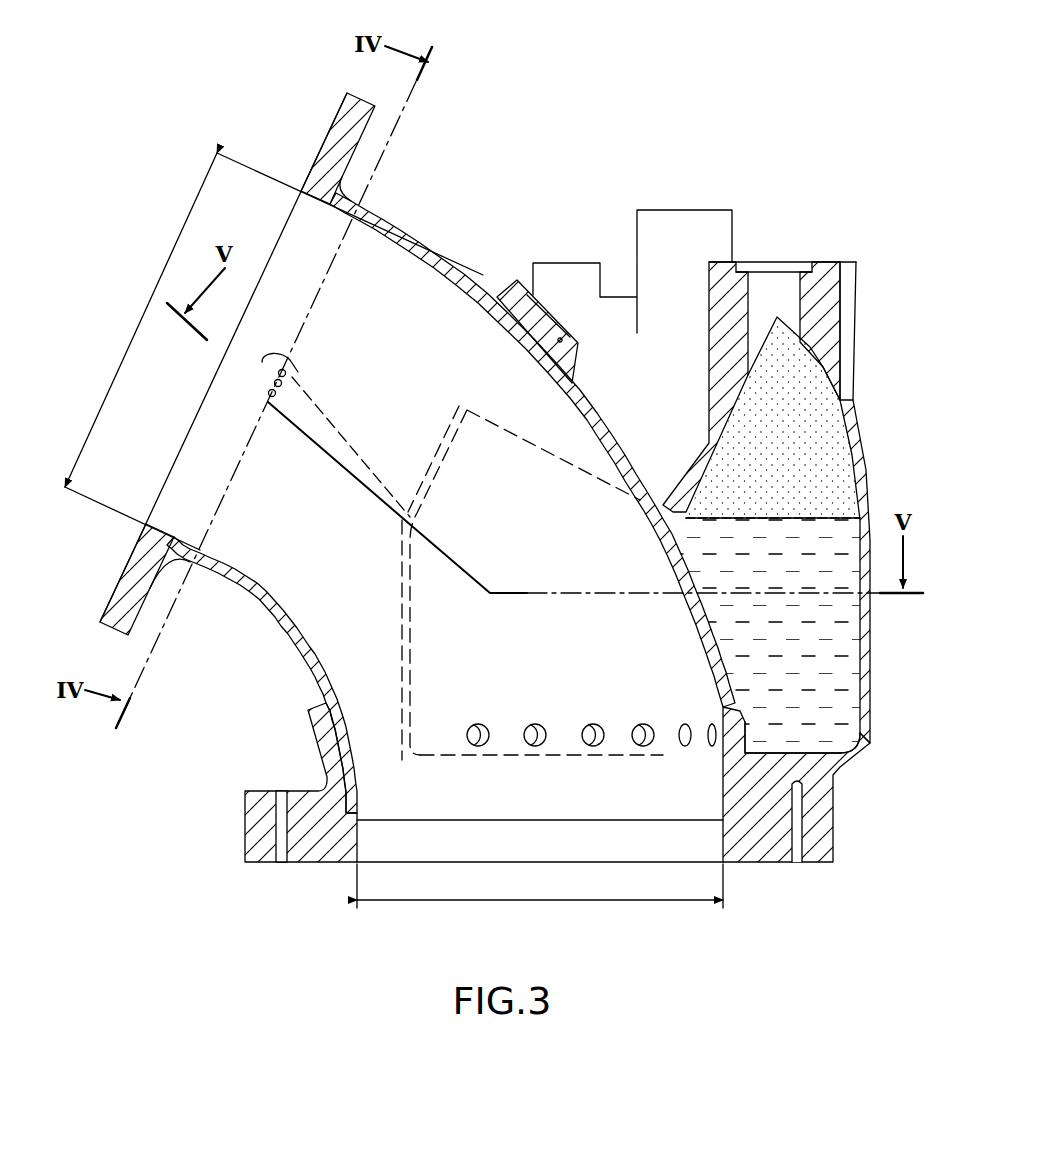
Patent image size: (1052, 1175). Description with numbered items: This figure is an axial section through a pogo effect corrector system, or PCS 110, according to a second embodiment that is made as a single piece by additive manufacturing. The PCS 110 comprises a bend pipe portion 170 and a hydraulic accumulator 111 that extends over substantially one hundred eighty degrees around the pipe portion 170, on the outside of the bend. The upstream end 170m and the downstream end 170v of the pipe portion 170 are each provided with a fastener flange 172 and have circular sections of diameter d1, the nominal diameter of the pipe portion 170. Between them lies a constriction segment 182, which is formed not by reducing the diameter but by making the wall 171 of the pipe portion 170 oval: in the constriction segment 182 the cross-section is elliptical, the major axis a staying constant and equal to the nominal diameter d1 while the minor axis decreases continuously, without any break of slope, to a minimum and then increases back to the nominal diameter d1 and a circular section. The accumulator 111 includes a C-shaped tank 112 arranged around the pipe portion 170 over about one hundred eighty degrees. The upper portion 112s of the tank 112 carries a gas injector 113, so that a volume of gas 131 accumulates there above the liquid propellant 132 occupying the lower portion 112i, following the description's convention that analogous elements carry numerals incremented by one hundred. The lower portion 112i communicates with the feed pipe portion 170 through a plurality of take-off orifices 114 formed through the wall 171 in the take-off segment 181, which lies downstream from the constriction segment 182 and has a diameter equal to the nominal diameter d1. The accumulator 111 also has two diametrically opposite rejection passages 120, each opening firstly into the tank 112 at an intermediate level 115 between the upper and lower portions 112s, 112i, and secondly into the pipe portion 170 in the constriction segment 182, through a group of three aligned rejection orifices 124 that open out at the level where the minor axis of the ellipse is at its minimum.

The pogo effect corrector system 110 is at (676, 68).
The hydraulic accumulator 111 is at (876, 436).
The tank 112 is at (868, 618).
The upper portion of the tank 112s is at (763, 465).
The lower portion of the tank 112i is at (766, 693).
The gas injector 113 is at (775, 277).
The take-off orifices 114 is at (640, 728).
The intermediate level 115 is at (800, 519).
The rejection passages 120 is at (374, 463).
The rejection orifices 124 is at (274, 396).
The inner wall 131 is at (848, 480).
The chamber bottom 132 is at (843, 676).
The bend pipe portion 170 is at (456, 268).
The upstream end 170m is at (133, 553).
The downstream end 170v is at (312, 862).
The wall 171 is at (446, 272).
The fastener flange 172 is at (250, 858).
The take-off segment 181 is at (487, 721).
The constriction segment 182 is at (327, 331).
The spray axis a is at (291, 378).
The nominal diameter d1 is at (143, 320).